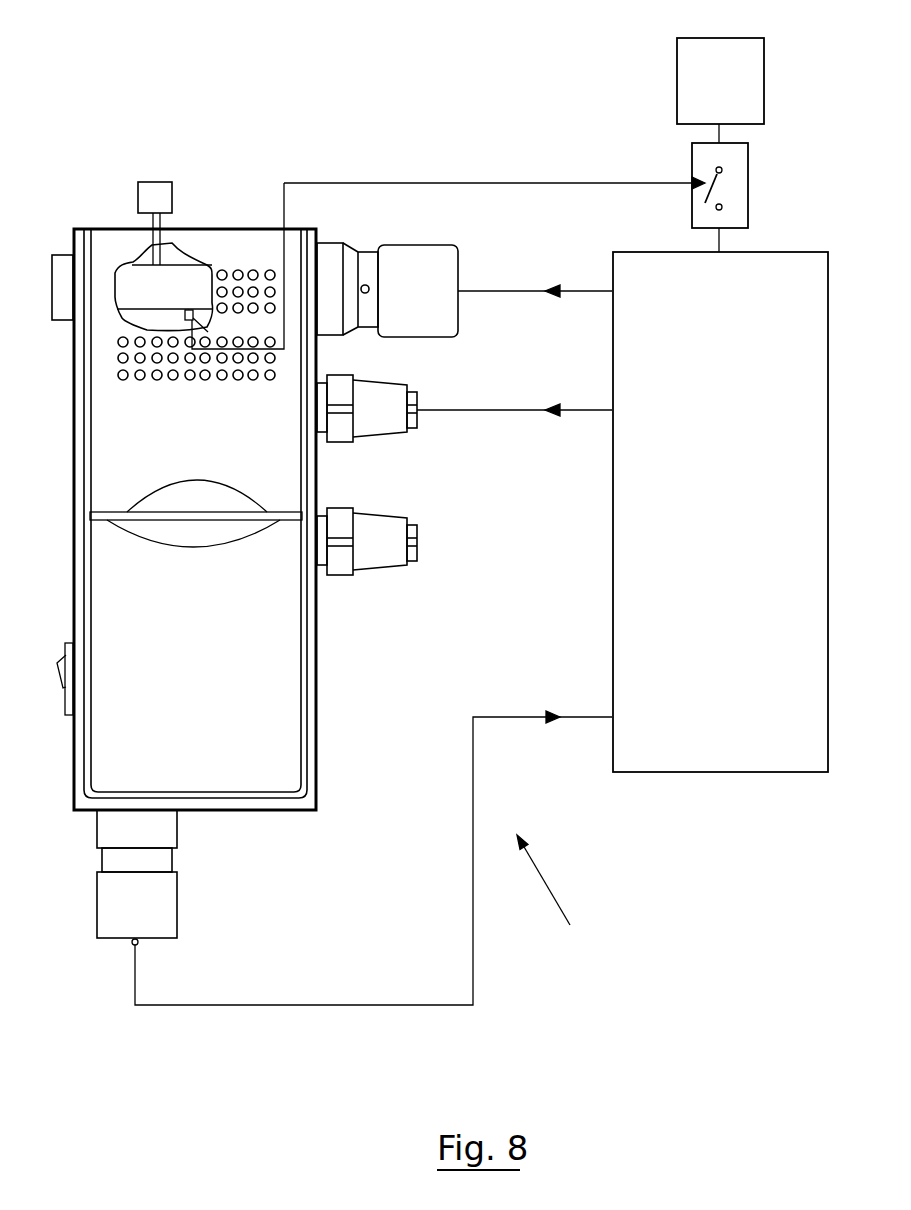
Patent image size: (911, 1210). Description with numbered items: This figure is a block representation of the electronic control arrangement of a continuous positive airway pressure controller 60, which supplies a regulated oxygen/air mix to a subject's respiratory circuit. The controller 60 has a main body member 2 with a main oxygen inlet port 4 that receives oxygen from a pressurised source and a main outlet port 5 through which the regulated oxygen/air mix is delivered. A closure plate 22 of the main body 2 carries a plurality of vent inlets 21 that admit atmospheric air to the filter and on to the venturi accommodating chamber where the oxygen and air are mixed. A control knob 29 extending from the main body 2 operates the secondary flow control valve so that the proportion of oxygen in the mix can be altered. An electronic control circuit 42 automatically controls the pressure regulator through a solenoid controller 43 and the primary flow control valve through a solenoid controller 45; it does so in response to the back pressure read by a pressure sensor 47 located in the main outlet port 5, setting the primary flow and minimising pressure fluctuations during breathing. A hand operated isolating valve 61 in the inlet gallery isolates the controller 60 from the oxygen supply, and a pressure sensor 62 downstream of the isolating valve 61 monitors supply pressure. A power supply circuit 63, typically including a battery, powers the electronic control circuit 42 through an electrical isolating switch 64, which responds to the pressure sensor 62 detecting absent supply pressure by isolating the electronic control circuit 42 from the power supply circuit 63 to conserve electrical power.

The main body member 2 is at (288, 808).
The main oxygen inlet port 4 is at (63, 300).
The main outlet port 5 is at (165, 890).
The vent inlets 21 is at (122, 373).
The closure plate 22 is at (263, 672).
The control knob 29 is at (380, 555).
The electronic control circuit 42 is at (738, 757).
The solenoid controller 43 is at (402, 250).
The solenoid controller 45 is at (383, 430).
The pressure sensor 47 is at (137, 945).
The continuous positive airway pressure controller 60 is at (564, 903).
The hand operated isolating valve 61 is at (165, 193).
The pressure sensor 62 is at (193, 322).
The power supply circuit 63 is at (743, 48).
The electrical isolating switch 64 is at (740, 183).